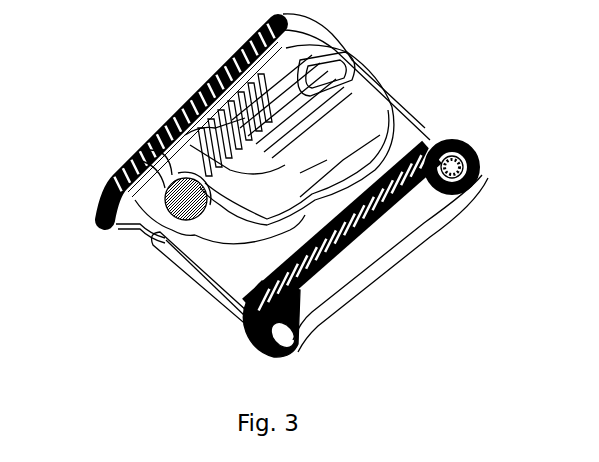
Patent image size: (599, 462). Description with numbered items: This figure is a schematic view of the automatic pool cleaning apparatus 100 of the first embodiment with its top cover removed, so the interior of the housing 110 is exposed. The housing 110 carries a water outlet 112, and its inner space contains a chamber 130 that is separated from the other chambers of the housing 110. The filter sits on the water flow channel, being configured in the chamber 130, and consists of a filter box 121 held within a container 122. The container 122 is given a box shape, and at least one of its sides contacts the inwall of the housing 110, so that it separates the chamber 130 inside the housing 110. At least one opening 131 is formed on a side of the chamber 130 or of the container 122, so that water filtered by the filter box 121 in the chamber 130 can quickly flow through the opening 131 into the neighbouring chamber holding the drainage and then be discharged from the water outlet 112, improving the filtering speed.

The apparatus 100 is at (158, 313).
The housing 110 is at (404, 110).
The water outlet 112 is at (172, 198).
The filter box 121 is at (342, 176).
The container 122 is at (233, 60).
The chamber 130 is at (275, 212).
The opening 131 is at (200, 146).